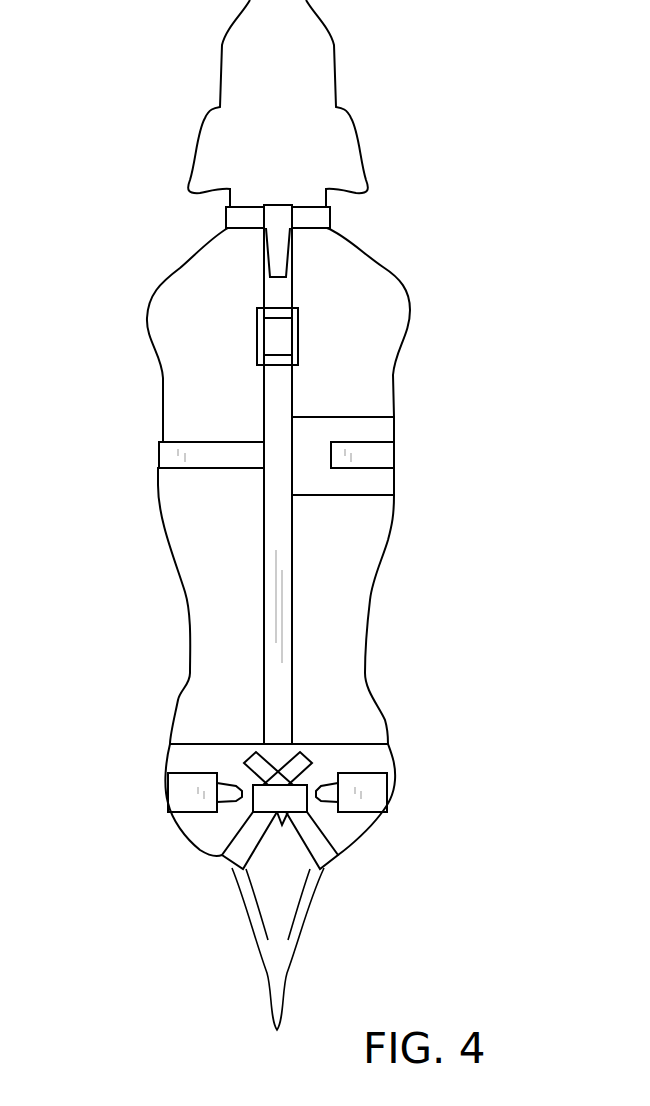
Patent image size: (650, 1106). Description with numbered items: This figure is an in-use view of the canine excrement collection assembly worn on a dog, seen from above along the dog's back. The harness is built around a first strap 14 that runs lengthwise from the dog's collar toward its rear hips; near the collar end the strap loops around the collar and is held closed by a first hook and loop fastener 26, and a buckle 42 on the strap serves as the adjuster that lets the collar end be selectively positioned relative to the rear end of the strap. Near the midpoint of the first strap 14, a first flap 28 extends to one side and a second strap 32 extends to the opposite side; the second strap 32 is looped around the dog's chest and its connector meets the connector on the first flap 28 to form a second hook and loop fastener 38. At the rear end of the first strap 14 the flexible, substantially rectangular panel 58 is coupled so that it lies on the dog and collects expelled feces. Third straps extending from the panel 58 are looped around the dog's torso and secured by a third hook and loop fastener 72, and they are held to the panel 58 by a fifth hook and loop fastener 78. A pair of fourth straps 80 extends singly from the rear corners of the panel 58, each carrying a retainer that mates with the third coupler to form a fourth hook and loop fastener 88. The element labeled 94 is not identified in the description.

The first strap 14 is at (283, 610).
The first hook and loop fastener 26 is at (275, 250).
The first flap 28 is at (368, 482).
The second strap 32 is at (203, 452).
The second hook and loop fastener 38 is at (375, 455).
The buckle 42 is at (298, 333).
The panel 58 is at (332, 757).
The third hook and loop fastener 72 is at (184, 776).
The fifth hook and loop fastener 78 is at (185, 803).
The fourth straps 80 is at (307, 847).
The fourth hook and loop fastener 88 is at (288, 800).
The tail strap 94 is at (310, 902).